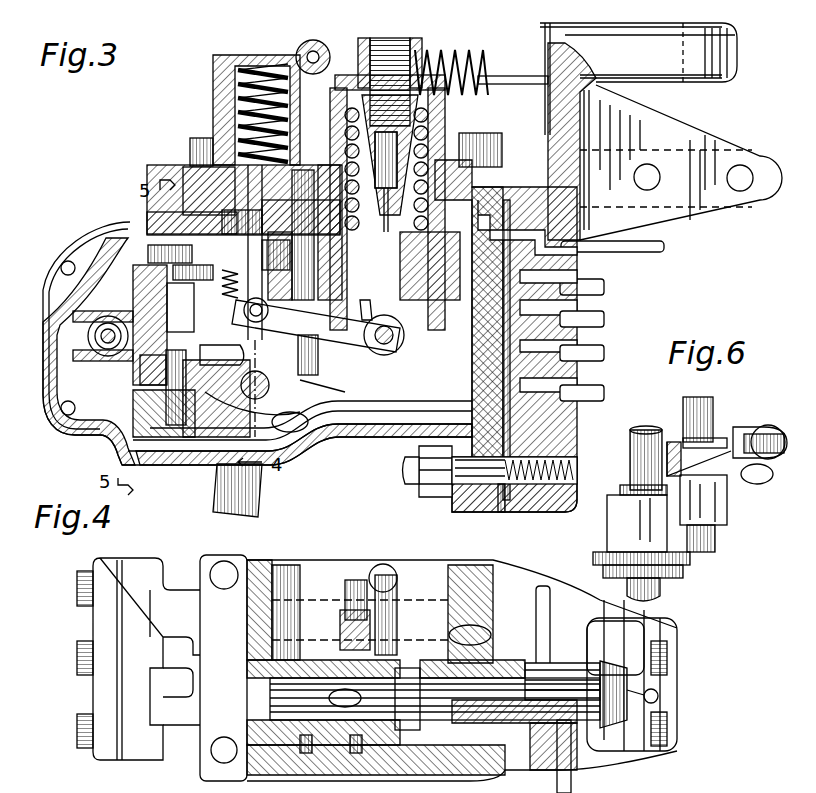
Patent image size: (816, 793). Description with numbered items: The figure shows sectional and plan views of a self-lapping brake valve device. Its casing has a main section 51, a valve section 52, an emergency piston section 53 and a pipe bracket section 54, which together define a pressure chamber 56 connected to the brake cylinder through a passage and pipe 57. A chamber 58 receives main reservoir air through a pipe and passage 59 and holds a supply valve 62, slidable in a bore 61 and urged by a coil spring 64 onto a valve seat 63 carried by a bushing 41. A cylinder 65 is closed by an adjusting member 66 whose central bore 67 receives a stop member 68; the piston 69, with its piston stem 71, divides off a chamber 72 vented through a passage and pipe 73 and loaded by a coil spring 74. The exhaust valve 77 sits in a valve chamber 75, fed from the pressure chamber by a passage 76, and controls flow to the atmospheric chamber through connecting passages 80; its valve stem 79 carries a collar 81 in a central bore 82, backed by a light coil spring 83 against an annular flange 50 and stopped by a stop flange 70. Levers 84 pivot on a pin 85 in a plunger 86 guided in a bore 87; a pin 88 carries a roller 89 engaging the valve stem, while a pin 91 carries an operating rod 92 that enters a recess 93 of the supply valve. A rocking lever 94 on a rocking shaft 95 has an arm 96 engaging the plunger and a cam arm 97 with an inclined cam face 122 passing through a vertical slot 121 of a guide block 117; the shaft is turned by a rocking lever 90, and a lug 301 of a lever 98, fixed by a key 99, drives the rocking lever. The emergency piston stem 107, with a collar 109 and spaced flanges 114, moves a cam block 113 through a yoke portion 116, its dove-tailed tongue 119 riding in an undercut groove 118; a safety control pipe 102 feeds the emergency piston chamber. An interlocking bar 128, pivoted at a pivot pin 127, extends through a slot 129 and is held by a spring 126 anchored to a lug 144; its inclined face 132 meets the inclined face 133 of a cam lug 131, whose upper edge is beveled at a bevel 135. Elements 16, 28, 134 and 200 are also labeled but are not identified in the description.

In FIG. 3, the housing cover 16 is at (57, 364).
In FIG. 3, the adjusting bolt 28 is at (415, 470).
In FIG. 3, the bushing 41 is at (301, 217).
In FIG. 3, the annular flange 50 is at (536, 197).
In FIG. 3, the main section 51 is at (360, 432).
In FIG. 3, the valve section 52 is at (213, 100).
In FIG. 3, the emergency piston section 53 is at (150, 235).
In FIG. 3, the pipe bracket section 54 is at (562, 430).
In FIG. 3, the pressure chamber 56 is at (405, 436).
In FIG. 3, the passage and pipe 57 is at (602, 318).
In FIG. 3, the chamber 58 is at (215, 185).
In FIG. 3, the pipe and passage 59 is at (680, 250).
In FIG. 3, the bore 61 is at (213, 112).
In FIG. 3, the supply valve 62 is at (225, 170).
In FIG. 3, the valve seat 63 is at (182, 260).
In FIG. 3, the coil spring 64 is at (268, 62).
In FIG. 3, the cylinder 65 is at (460, 280).
In FIG. 3, the adjusting member 66 is at (420, 167).
In FIG. 3, the central bore 67 is at (412, 180).
In FIG. 3, the stop member 68 is at (385, 58).
In FIG. 3, the piston 69 is at (430, 285).
In FIG. 3, the stop flange 70 is at (430, 310).
In FIG. 3, the piston stem 71 is at (337, 169).
In FIG. 3, the chamber 72 is at (432, 160).
In FIG. 3, the passage and pipe 73 is at (470, 185).
In FIG. 3, the coil spring 74 is at (484, 76).
In FIG. 3, the valve chamber 75 is at (316, 326).
In FIG. 3, the passage 76 is at (405, 300).
In FIG. 3, the exhaust valve 77 is at (402, 205).
In FIG. 3, the valve stem 79 is at (390, 315).
In FIG. 3, the connecting passages 80 is at (326, 146).
In FIG. 3, the collar 81 is at (372, 352).
In FIG. 3, the central bore 82 is at (323, 356).
In FIG. 3, the light coil spring 83 is at (440, 296).
In FIG. 3, the levers 84 is at (380, 350).
In FIG. 4, the levers 84 is at (345, 630).
In FIG. 3, the pin 85 is at (305, 235).
In FIG. 3, the plunger 86 is at (330, 390).
In FIG. 3, the bore 87 is at (294, 146).
In FIG. 3, the pin 88 is at (400, 345).
In FIG. 3, the roller 89 is at (395, 336).
In FIG. 3, the rocking lever 90 is at (250, 505).
In FIG. 4, the rocking lever 90 is at (571, 778).
In FIG. 3, the pin 91 is at (240, 330).
In FIG. 4, the pin 91 is at (345, 632).
In FIG. 3, the operating rod 92 is at (242, 222).
In FIG. 4, the operating rod 92 is at (350, 600).
In FIG. 3, the recess 93 is at (209, 191).
In FIG. 3, the rocking lever 94 is at (214, 395).
In FIG. 4, the rocking lever 94 is at (320, 748).
In FIG. 3, the rocking shaft 95 is at (215, 440).
In FIG. 4, the rocking shaft 95 is at (448, 695).
In FIG. 3, the arm 96 is at (325, 440).
In FIG. 3, the cam arm 97 is at (170, 420).
In FIG. 3, the lever 98 is at (265, 252).
In FIG. 6, the lever 98 is at (775, 460).
In FIG. 4, the lever 98 is at (395, 630).
In FIG. 3, the key 99 is at (290, 422).
In FIG. 4, the key 99 is at (345, 697).
In FIG. 3, the safety control pipe 102 is at (604, 353).
In FIG. 4, the safety control pipe 102 is at (355, 770).
In FIG. 3, the piston stem 107 is at (88, 336).
In FIG. 6, the piston stem 107 is at (632, 450).
In FIG. 6, the collar 109 is at (668, 568).
In FIG. 3, the cam block 113 is at (150, 372).
In FIG. 6, the cam block 113 is at (598, 544).
In FIG. 6, the spaced flanges 114 is at (621, 488).
In FIG. 6, the yoke portion 116 is at (607, 522).
In FIG. 3, the guide block 117 is at (182, 300).
In FIG. 6, the guide block 117 is at (700, 420).
In FIG. 3, the undercut groove 118 is at (125, 312).
In FIG. 6, the undercut groove 118 is at (720, 468).
In FIG. 3, the dove-tailed tongue 119 is at (154, 325).
In FIG. 6, the dove-tailed tongue 119 is at (726, 535).
In FIG. 3, the vertical slot 121 is at (252, 388).
In FIG. 4, the vertical slot 121 is at (372, 752).
In FIG. 3, the inclined cam face 122 is at (165, 392).
In FIG. 3, the spring 126 is at (232, 290).
In FIG. 4, the spring 126 is at (405, 605).
In FIG. 3, the pivot pin 127 is at (255, 255).
In FIG. 6, the pivot pin 127 is at (768, 425).
In FIG. 4, the pivot pin 127 is at (398, 600).
In FIG. 3, the interlocking bar 128 is at (158, 262).
In FIG. 6, the interlocking bar 128 is at (735, 428).
In FIG. 4, the interlocking bar 128 is at (392, 580).
In FIG. 3, the slot 129 is at (160, 240).
In FIG. 6, the slot 129 is at (720, 495).
In FIG. 4, the slot 129 is at (352, 580).
In FIG. 3, the cam lug 131 is at (120, 268).
In FIG. 6, the cam lug 131 is at (655, 485).
In FIG. 3, the inclined face 132 is at (160, 250).
In FIG. 6, the inclined face 132 is at (678, 455).
In FIG. 6, the inclined face 133 is at (637, 520).
In FIG. 3, the spring 134 is at (438, 50).
In FIG. 6, the bevel 135 is at (690, 440).
In FIG. 3, the lug 144 is at (115, 337).
In FIG. 4, the lug 144 is at (470, 634).
In FIG. 3, the port 200 is at (604, 392).
In FIG. 4, the port 200 is at (330, 768).
In FIG. 3, the lug 301 is at (222, 364).